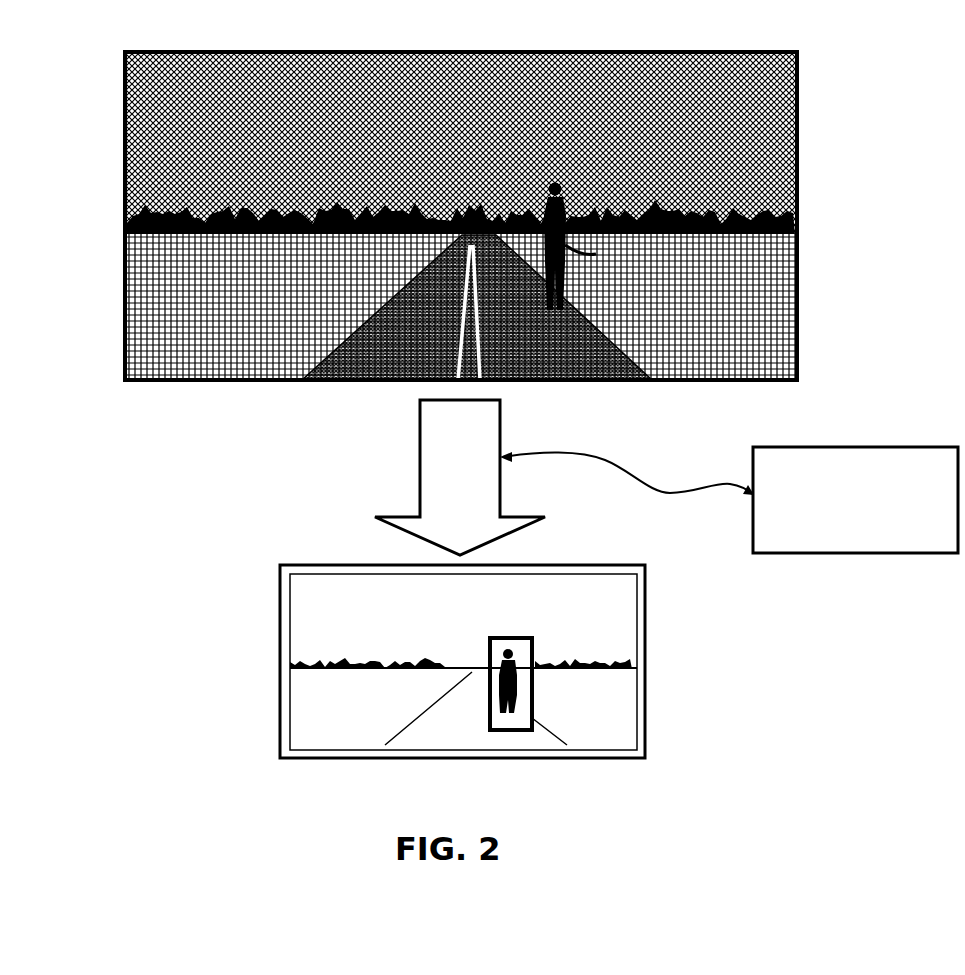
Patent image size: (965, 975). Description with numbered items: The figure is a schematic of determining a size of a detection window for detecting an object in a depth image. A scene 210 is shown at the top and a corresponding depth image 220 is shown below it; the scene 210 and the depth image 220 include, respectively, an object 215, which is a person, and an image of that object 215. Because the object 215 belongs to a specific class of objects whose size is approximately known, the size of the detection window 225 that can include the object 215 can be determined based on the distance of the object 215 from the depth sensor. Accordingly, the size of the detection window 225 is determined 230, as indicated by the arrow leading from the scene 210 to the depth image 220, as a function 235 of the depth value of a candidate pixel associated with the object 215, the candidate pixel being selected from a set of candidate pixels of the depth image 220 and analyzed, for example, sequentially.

The scene 210 is at (126, 92).
The object 215 is at (572, 258).
The depth image 220 is at (280, 668).
The detection window 225 is at (490, 713).
The determining 230 is at (424, 457).
The function of the depth value 235 is at (905, 447).